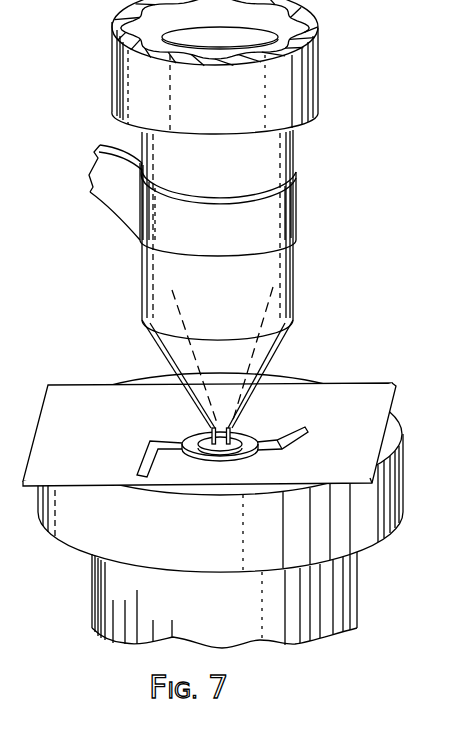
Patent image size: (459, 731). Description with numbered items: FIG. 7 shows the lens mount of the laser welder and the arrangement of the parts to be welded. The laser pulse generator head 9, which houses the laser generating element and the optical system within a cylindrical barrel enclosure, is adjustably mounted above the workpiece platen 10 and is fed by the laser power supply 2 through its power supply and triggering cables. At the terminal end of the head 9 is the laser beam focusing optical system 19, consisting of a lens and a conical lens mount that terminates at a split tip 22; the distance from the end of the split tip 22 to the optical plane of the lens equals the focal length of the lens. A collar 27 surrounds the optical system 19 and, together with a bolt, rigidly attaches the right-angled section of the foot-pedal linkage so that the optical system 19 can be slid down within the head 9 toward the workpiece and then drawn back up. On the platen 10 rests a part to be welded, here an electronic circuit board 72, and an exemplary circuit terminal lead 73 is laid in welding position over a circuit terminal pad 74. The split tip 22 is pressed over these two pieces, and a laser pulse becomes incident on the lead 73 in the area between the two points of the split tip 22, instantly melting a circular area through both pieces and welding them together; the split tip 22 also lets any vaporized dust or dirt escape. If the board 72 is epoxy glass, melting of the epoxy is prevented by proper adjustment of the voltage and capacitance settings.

The laser pulse generator head 9 is at (322, 64).
The laser beam focusing optical system 19 is at (297, 140).
The collar 27 is at (300, 198).
The laser power supply 2 is at (282, 347).
The electronic circuit board 72 is at (365, 392).
The workpiece platen 10 is at (395, 430).
The split tip 22 is at (237, 430).
The circuit terminal lead 73 is at (293, 441).
The circuit terminal pad 74 is at (138, 452).